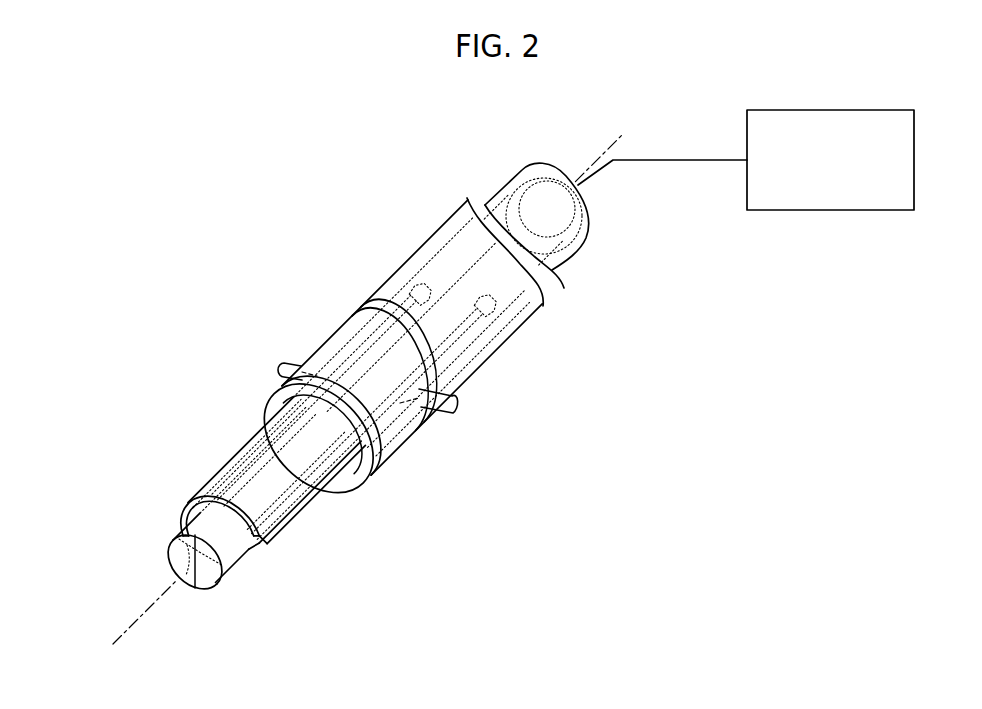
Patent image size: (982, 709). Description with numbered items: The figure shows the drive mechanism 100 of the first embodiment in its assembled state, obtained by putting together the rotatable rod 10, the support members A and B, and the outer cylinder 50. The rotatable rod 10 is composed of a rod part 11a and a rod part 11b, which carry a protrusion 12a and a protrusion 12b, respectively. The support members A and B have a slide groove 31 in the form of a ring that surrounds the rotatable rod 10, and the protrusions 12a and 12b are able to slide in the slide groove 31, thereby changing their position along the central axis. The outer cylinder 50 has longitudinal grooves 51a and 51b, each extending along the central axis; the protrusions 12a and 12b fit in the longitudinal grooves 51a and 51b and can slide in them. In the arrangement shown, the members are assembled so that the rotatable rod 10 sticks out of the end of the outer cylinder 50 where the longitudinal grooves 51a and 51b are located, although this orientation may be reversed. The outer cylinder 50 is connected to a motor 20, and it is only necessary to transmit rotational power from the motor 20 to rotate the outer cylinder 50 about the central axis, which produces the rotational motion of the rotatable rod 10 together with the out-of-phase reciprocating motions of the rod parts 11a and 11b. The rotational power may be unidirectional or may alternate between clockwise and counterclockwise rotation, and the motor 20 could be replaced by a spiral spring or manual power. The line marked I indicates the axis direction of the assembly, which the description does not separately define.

The drive mechanism 100 is at (258, 302).
The rotatable rod 10 is at (158, 551).
The rod part 11a is at (210, 582).
The rod part 11b is at (178, 566).
The protrusion 12a is at (461, 404).
The protrusion 12b is at (283, 368).
The motor 20 is at (880, 110).
The slide groove 31 is at (380, 308).
The outer cylinder 50 is at (236, 458).
The longitudinal groove 51a is at (254, 538).
The longitudinal groove 51b is at (180, 525).
The support member A is at (330, 357).
The support member B is at (405, 283).
The axis I is at (118, 633).